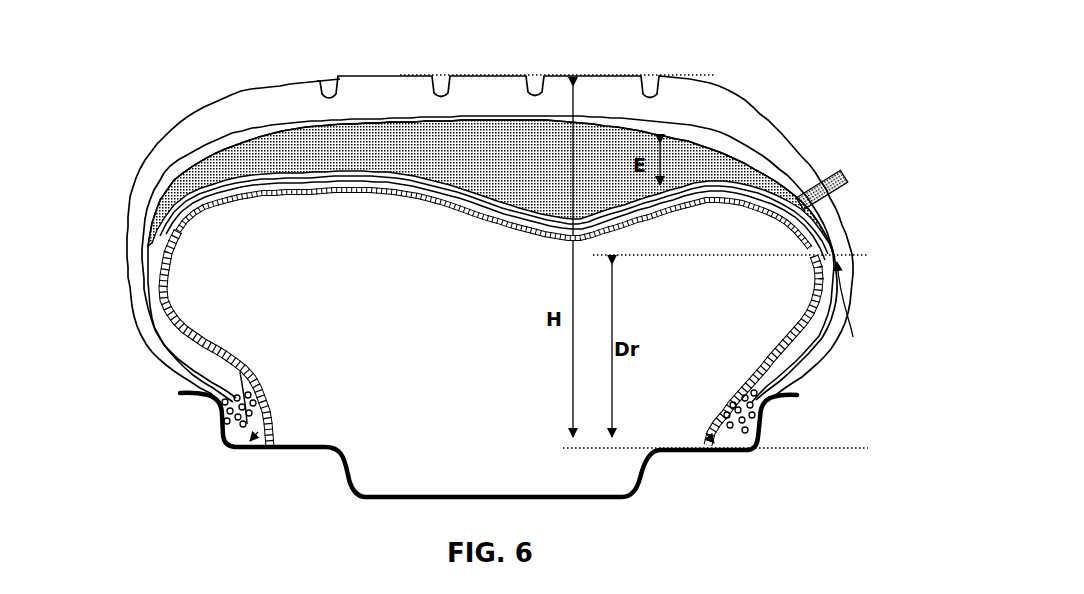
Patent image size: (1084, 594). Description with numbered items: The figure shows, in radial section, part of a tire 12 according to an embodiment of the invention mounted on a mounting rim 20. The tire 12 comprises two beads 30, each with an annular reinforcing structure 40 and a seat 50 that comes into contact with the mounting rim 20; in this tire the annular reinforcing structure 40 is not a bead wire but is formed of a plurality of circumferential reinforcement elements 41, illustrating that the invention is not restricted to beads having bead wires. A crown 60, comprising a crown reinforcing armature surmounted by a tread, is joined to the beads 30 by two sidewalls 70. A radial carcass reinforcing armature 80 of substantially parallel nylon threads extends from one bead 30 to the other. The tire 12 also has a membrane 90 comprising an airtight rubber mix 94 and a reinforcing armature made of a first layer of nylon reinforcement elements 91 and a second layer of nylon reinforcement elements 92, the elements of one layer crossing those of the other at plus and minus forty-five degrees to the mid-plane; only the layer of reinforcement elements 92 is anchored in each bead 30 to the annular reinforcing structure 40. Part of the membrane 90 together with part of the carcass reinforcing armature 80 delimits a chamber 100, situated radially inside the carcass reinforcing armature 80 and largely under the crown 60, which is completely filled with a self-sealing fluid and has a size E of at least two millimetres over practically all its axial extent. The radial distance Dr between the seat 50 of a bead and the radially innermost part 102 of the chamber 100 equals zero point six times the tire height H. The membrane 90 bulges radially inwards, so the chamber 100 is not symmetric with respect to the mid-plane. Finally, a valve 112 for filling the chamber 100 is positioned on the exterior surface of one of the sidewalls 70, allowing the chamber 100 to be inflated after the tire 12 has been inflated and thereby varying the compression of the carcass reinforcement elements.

The tire 12 is at (784, 82).
The mounting rim 20 is at (642, 483).
The bead 30 is at (258, 413).
The annular reinforcing structure 40 is at (220, 420).
The circumferential reinforcement elements 41 is at (243, 430).
The seat 50 is at (258, 432).
The crown 60 is at (490, 95).
The sidewall 70 is at (137, 237).
The carcass reinforcing armature 80 is at (150, 300).
The membrane 90 is at (348, 182).
The first layer of reinforcement elements 91 is at (270, 178).
The second layer of reinforcement elements 92 is at (303, 197).
The airtight rubber mix 94 is at (190, 218).
The chamber 100 is at (452, 164).
The radially innermost part of the chamber 102 is at (861, 311).
The valve 112 is at (826, 172).